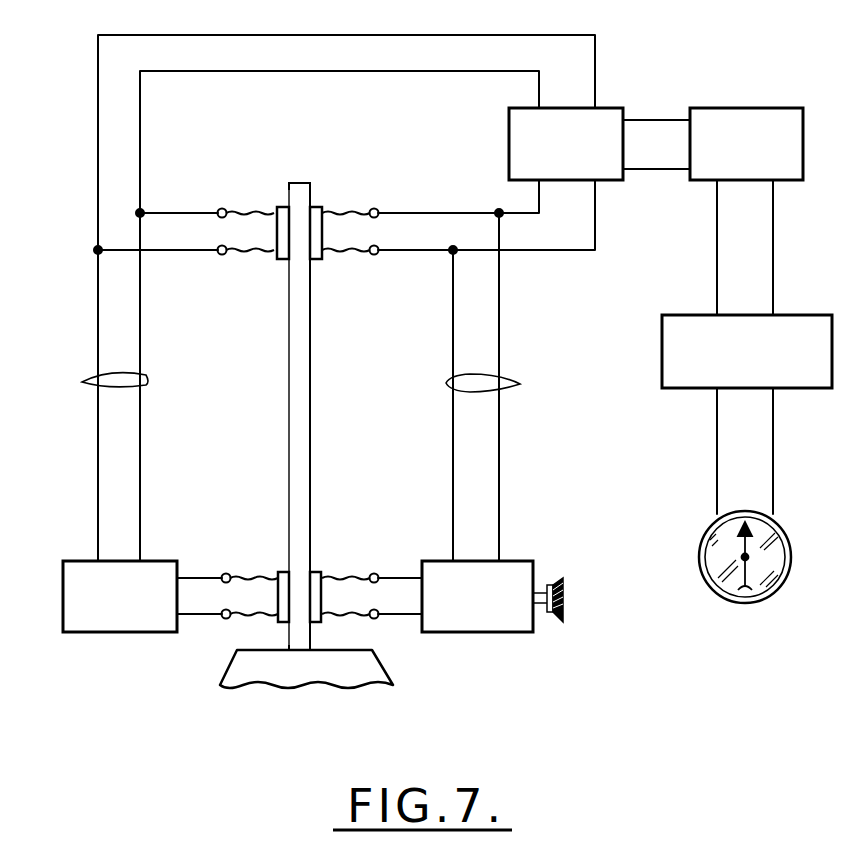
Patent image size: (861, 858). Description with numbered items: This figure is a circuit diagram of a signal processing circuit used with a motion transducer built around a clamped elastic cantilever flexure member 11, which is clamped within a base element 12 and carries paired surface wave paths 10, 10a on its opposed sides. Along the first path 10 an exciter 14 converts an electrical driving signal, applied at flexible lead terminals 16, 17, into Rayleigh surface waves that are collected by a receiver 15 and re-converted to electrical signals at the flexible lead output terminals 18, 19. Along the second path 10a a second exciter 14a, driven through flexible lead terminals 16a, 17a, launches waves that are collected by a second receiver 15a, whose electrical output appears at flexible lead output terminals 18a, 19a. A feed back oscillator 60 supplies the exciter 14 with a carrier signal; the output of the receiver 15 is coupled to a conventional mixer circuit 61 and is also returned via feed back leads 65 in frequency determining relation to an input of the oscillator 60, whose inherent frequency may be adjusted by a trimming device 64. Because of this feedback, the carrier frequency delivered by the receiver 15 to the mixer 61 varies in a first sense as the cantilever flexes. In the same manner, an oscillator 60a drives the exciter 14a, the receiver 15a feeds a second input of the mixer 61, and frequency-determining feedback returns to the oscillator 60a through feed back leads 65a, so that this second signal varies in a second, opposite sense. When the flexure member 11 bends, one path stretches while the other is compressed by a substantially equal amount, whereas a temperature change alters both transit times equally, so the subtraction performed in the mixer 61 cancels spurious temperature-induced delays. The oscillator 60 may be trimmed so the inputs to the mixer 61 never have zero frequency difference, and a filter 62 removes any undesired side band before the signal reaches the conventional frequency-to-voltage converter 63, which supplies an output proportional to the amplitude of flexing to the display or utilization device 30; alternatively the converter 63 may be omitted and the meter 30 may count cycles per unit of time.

The surface wave path 10 is at (310, 432).
The second surface wave path 10a is at (289, 426).
The cantilever flexure member 11 is at (298, 357).
The base element 12 is at (365, 648).
The exciter 14 is at (316, 572).
The second exciter 14a is at (282, 572).
The receiver 15 is at (318, 207).
The second receiver 15a is at (281, 207).
The flexible lead terminal 16 is at (382, 592).
The flexible lead terminal 16a is at (226, 619).
The flexible lead terminal 17 is at (374, 573).
The flexible lead terminal 17a is at (226, 573).
The flexible lead output terminal 18 is at (376, 255).
The flexible lead output terminal 18a is at (222, 255).
The flexible lead output terminal 19 is at (374, 208).
The flexible lead output terminal 19a is at (222, 208).
The display or utilization device 30 is at (790, 572).
The feed back oscillator 60 is at (520, 561).
The second oscillator 60a is at (80, 561).
The mixer circuit 61 is at (612, 108).
The filter 62 is at (745, 108).
The frequency-to-voltage converter 63 is at (690, 315).
The trimming device 64 is at (563, 596).
The feed back leads 65 is at (520, 384).
The feed back leads 65a is at (82, 382).